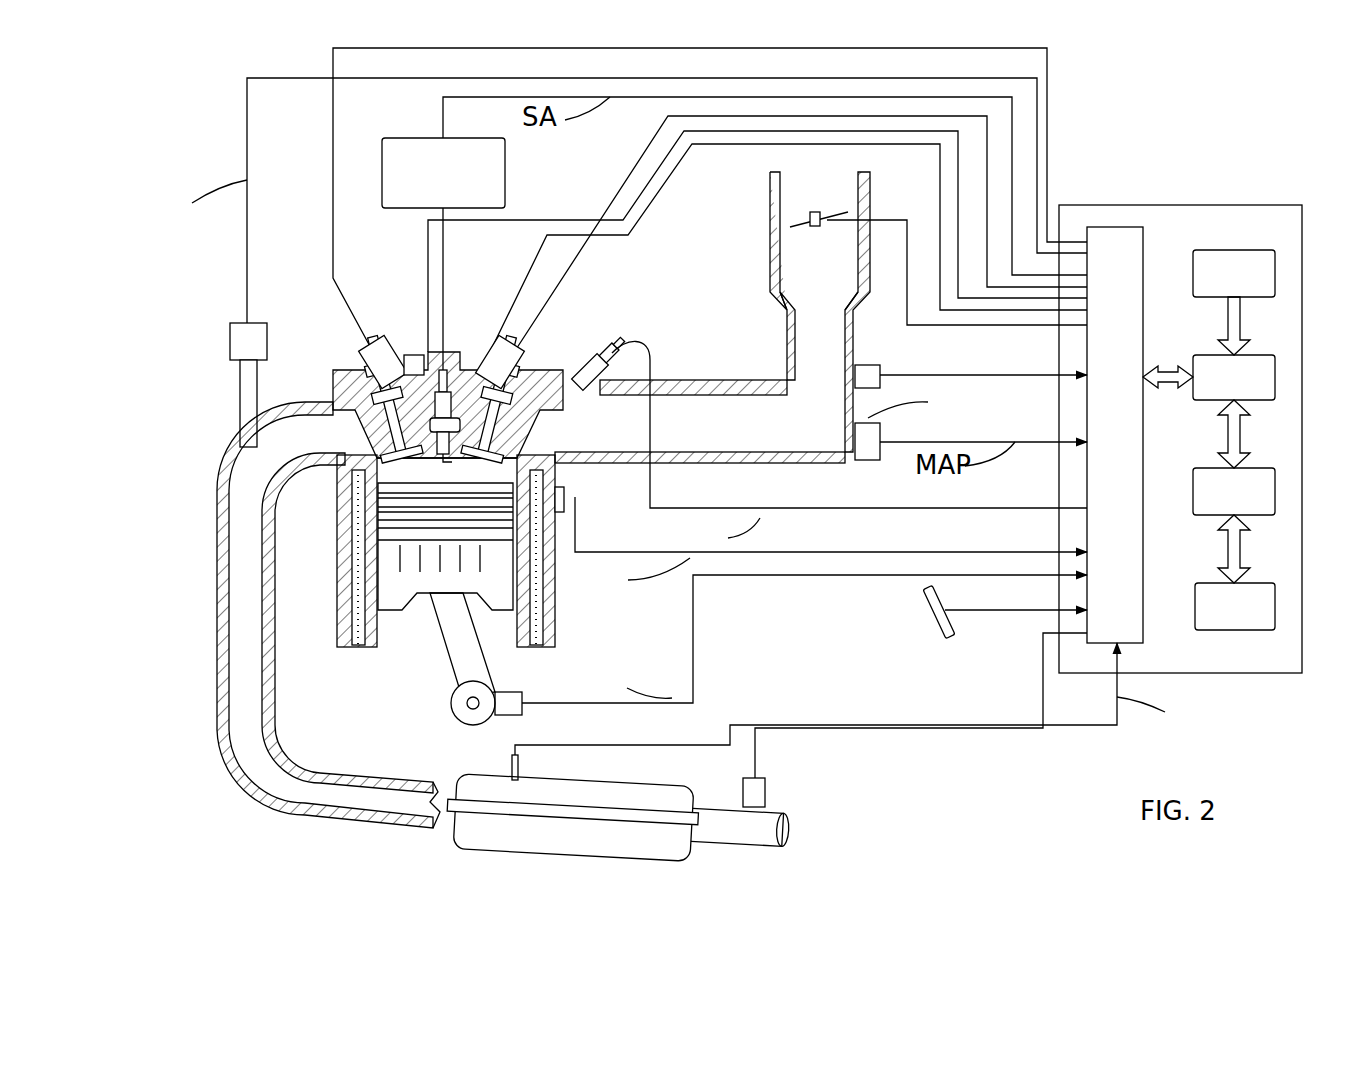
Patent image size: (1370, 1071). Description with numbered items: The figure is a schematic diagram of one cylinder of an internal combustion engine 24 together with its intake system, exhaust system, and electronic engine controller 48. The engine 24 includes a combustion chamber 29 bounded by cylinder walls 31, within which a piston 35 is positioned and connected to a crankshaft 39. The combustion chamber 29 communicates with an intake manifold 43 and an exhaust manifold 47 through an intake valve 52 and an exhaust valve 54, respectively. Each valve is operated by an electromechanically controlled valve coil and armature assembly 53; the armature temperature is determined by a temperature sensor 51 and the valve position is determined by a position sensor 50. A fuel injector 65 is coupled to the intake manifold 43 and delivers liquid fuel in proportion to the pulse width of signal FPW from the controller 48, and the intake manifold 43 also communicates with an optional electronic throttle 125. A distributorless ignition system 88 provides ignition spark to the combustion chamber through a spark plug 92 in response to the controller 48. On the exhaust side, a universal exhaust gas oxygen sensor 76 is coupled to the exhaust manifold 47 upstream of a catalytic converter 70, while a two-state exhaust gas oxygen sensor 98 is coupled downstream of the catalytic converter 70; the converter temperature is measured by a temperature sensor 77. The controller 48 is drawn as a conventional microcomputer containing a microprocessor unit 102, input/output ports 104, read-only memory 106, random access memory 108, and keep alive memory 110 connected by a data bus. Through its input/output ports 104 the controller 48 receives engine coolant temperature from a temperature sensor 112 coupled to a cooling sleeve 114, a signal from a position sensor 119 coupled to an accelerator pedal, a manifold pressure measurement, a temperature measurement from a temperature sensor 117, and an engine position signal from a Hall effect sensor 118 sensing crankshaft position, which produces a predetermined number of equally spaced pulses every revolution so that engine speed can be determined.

The internal combustion engine 24 is at (333, 367).
The combustion chamber 29 is at (437, 478).
The cylinder walls 31 is at (377, 642).
The piston 35 is at (428, 595).
The crankshaft 39 is at (452, 703).
The intake manifold 43 is at (792, 441).
The exhaust manifold 47 is at (245, 510).
The electronic engine controller 48 is at (1222, 205).
The position sensor 50 is at (412, 355).
The temperature sensor 51 is at (467, 350).
The intake valve 52 is at (512, 447).
The valve coil and armature assembly 53 is at (378, 352).
The exhaust valve 54 is at (405, 452).
The fuel injector 65 is at (600, 355).
The catalytic converter 70 is at (553, 852).
The UEGO sensor 76 is at (242, 353).
The temperature sensor 77 is at (512, 770).
The distributorless ignition system 88 is at (505, 198).
The spark plug 92 is at (447, 365).
The two-state exhaust gas oxygen sensor 98 is at (770, 775).
The microprocessor unit 102 is at (1275, 388).
The input/output ports 104 is at (1145, 268).
The read-only memory 106 is at (1275, 282).
The random access memory 108 is at (1275, 495).
The keep alive memory 110 is at (1275, 610).
The temperature sensor 112 is at (565, 495).
The cooling sleeve 114 is at (358, 655).
The temperature sensor 117 is at (882, 370).
The Hall effect sensor 118 is at (520, 712).
The position sensor 119 is at (920, 622).
The electronic throttle 125 is at (805, 205).